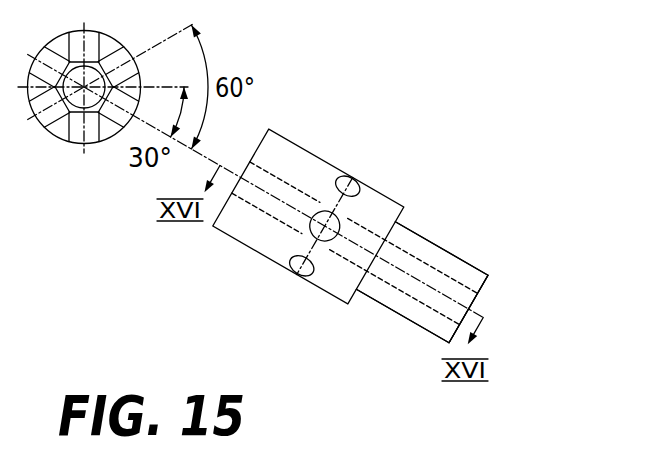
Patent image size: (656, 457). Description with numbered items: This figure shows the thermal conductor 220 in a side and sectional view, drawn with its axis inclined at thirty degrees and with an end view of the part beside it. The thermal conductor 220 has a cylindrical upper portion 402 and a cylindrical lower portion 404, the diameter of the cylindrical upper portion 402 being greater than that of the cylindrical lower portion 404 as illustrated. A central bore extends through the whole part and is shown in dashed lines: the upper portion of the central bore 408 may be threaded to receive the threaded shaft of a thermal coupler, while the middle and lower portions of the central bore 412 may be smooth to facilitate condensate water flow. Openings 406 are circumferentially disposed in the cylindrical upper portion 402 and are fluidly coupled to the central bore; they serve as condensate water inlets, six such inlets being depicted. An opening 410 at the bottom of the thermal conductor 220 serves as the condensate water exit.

The thermal conductor 220 is at (464, 262).
The cylindrical upper portion 402 is at (242, 228).
The cylindrical lower portion 404 is at (414, 237).
The openings 406 is at (342, 178).
The upper portion of the central bore 408 is at (282, 180).
The opening 410 is at (474, 300).
The middle and lower portions of the central bore 412 is at (412, 296).